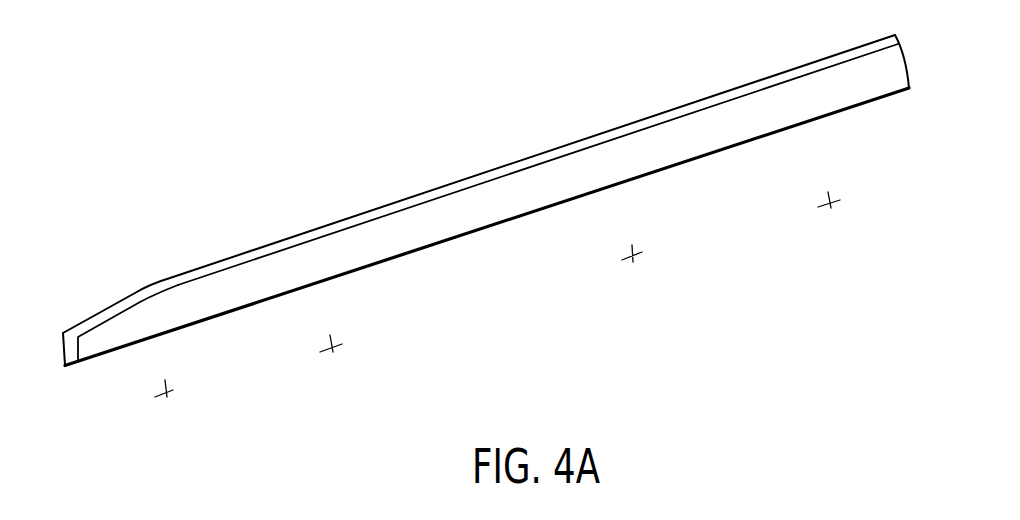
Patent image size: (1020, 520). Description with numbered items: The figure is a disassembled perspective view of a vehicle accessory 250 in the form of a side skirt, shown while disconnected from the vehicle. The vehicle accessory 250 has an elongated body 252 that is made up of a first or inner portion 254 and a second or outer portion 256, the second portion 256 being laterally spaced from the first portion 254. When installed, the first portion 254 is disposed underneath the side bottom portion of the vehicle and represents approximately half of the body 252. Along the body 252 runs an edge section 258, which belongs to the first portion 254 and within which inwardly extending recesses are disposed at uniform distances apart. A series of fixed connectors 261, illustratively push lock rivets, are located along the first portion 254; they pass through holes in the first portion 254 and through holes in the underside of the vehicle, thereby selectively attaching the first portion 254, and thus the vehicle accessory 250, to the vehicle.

The vehicle accessory 250 is at (486, 187).
The body 252 is at (650, 138).
The first portion 254 is at (845, 107).
The second portion 256 is at (340, 238).
The edge section 258 is at (451, 182).
The fixed connectors 261 is at (167, 395).